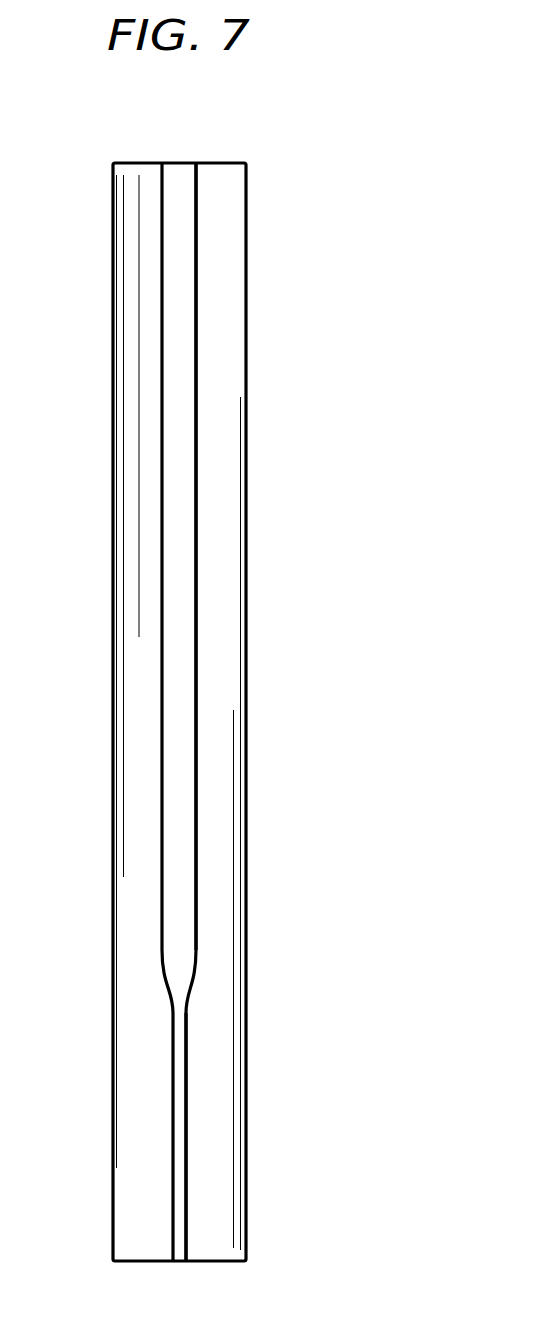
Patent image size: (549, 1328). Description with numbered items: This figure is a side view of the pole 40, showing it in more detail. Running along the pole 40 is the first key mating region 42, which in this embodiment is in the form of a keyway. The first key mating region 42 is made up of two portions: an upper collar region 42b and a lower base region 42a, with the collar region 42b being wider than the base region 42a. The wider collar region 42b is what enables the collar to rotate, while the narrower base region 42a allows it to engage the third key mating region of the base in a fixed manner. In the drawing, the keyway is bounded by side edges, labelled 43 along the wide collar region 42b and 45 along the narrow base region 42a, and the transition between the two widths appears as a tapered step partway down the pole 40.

The printhead body 40 is at (347, 141).
The channel 42 is at (197, 822).
The narrow channel portion 42a is at (178, 1123).
The wide channel portion 42b is at (184, 493).
The channel side wall 43 is at (161, 571).
The narrow channel side wall 45 is at (170, 1100).